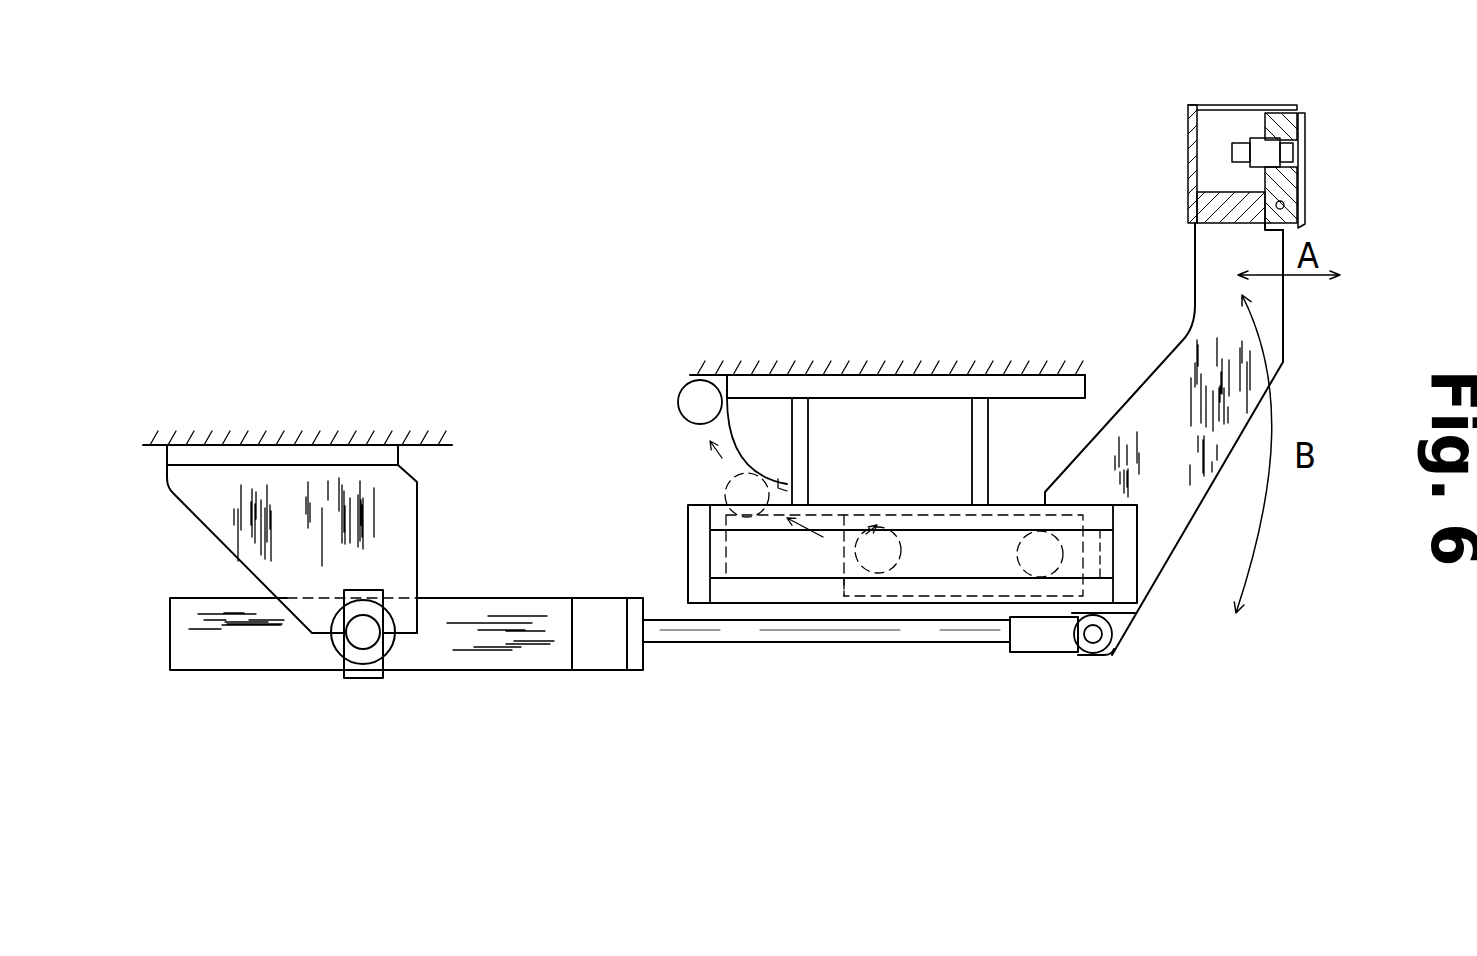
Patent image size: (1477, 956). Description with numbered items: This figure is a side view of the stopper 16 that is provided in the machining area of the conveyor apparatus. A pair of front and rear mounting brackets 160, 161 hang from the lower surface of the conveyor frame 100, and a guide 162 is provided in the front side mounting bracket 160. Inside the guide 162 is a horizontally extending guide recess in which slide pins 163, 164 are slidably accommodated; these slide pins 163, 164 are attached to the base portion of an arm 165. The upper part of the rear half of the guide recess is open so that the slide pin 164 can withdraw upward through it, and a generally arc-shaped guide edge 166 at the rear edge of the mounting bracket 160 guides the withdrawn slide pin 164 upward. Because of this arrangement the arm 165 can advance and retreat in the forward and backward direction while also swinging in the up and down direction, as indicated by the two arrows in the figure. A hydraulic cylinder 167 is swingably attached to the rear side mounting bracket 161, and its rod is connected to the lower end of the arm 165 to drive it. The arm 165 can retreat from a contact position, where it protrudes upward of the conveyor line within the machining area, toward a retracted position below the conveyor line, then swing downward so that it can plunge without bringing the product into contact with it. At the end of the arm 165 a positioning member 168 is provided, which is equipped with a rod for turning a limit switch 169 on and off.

The stopper 16 is at (1065, 208).
The conveyor frame 100 is at (350, 445).
The front side mounting bracket 160 is at (930, 407).
The rear side mounting bracket 161 is at (393, 515).
The guide 162 is at (1125, 523).
The slide pin 163 is at (1042, 580).
The slide pin 164 is at (678, 405).
The arm 165 is at (1157, 390).
The arc-shaped guide edge 166 is at (790, 490).
The hydraulic cylinder 167 is at (497, 652).
The positioning member 168 is at (1307, 117).
The limit switch 169 is at (1257, 153).